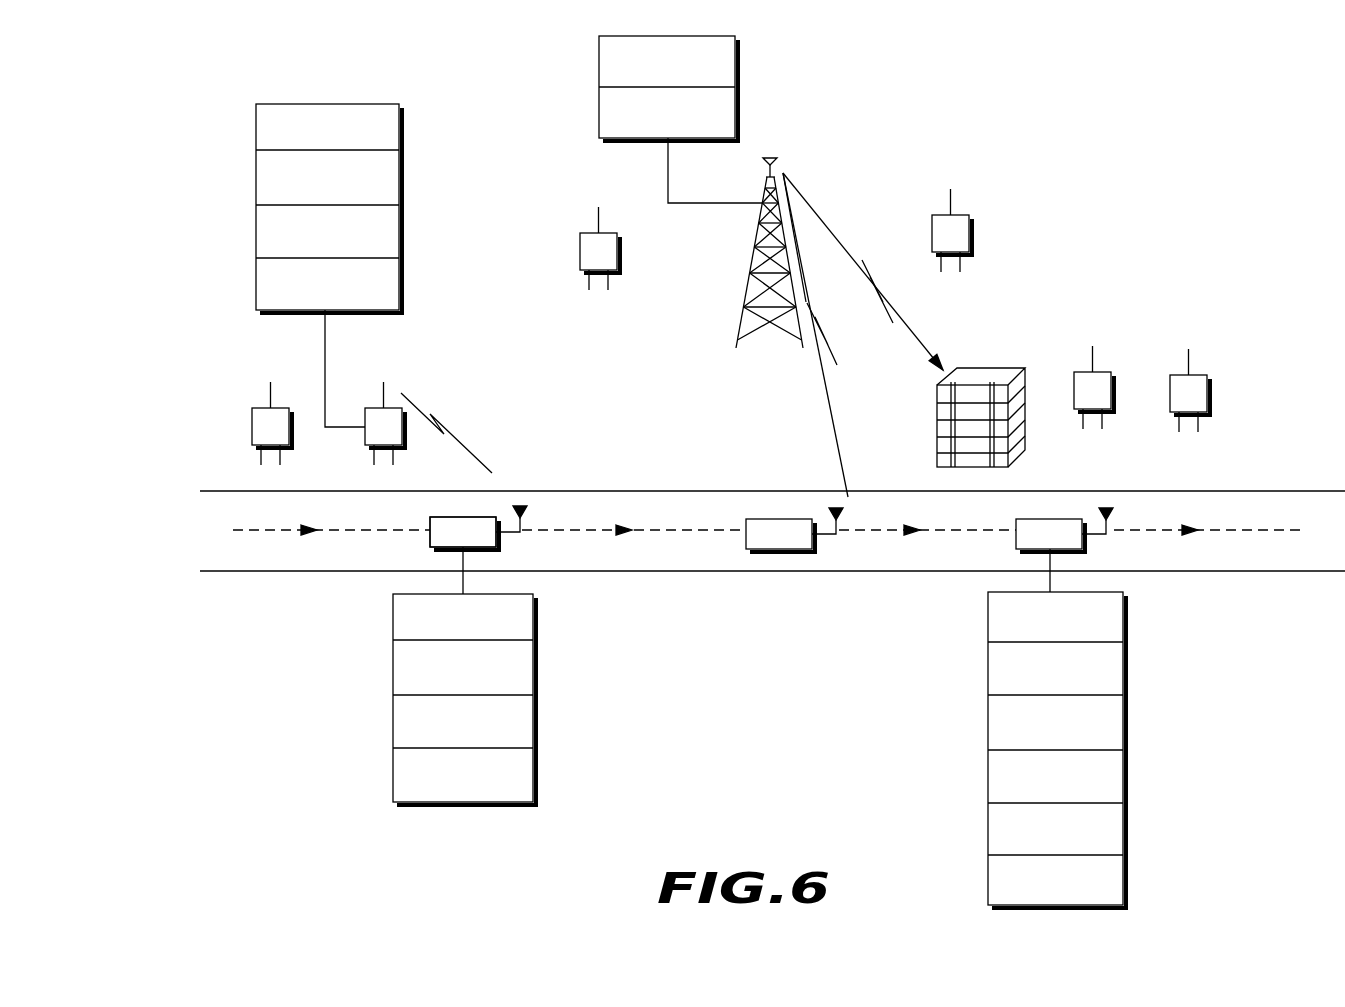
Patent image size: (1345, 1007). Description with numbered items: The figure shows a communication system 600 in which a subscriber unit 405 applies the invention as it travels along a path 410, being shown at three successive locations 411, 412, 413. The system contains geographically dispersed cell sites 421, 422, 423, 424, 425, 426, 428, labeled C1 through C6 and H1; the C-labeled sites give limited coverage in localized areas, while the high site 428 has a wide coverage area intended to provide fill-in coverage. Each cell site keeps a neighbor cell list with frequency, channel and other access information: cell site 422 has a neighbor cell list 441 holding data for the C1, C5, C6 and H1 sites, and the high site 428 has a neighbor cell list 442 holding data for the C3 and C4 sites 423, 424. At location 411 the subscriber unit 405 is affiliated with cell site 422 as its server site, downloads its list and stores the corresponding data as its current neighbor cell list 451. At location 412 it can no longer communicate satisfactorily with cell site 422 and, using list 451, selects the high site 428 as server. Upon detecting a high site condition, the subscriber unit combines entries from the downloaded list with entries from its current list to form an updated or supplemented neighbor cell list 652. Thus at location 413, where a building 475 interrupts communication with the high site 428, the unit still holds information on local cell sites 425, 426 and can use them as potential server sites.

The communication system 600 is at (1292, 272).
The path 410 is at (233, 529).
The subscriber unit 405 is at (430, 547).
The location 411 is at (370, 562).
The location 412 is at (712, 562).
The location 413 is at (998, 562).
The cell site 421 is at (250, 406).
The cell site 422 is at (375, 408).
The cell site 423 is at (580, 250).
The cell site 424 is at (972, 240).
The cell site 425 is at (1112, 375).
The cell site 426 is at (1208, 378).
The high site 428 is at (743, 303).
The neighbor cell list 441 is at (412, 222).
The neighbor cell list 442 is at (748, 95).
The current neighbor cell list 451 is at (543, 690).
The building 475 is at (932, 410).
The updated neighbor cell list 652 is at (1142, 728).